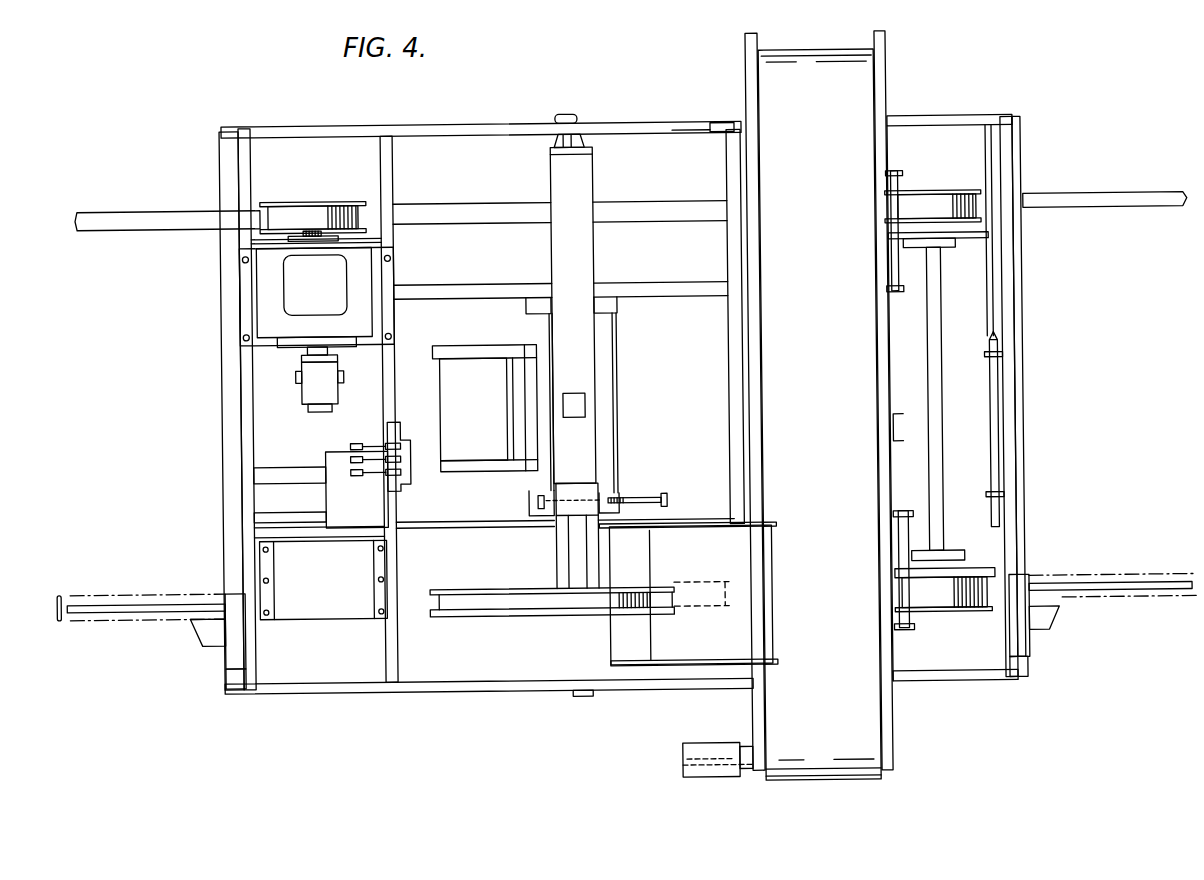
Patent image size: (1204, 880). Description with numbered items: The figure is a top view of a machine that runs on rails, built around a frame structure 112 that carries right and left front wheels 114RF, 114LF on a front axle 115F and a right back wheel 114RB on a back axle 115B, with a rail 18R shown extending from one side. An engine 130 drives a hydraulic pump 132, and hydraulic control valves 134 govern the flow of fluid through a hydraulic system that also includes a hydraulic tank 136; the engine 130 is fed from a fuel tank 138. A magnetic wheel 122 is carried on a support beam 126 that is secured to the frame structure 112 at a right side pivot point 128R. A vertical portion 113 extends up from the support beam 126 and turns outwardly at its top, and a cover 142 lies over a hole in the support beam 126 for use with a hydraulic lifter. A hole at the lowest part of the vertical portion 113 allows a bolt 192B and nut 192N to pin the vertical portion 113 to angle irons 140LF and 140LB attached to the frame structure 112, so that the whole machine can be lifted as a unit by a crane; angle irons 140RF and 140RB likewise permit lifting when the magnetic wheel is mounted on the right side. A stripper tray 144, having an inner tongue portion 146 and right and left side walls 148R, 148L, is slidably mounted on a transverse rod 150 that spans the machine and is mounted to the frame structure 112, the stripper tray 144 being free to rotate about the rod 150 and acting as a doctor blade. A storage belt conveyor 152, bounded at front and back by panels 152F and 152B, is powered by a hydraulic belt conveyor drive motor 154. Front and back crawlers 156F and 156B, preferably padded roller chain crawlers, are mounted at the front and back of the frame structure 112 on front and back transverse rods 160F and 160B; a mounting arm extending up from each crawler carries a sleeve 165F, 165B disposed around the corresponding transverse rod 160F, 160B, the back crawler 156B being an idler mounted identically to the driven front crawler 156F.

The right side rail 18R is at (148, 216).
The frame structure 112 is at (672, 126).
The vertical portion 113 is at (568, 483).
The right back wheel 114RB is at (318, 206).
The right front wheel 114RF is at (935, 195).
The left front wheel 114LF is at (948, 610).
The back axle 115B is at (320, 228).
The front axle 115F is at (942, 320).
The magnetic wheel 122 is at (500, 610).
The support beam 126 is at (585, 255).
The right side pivot point 128R is at (573, 138).
The engine 130 is at (290, 283).
The hydraulic pump 132 is at (305, 400).
The hydraulic control valve 134 is at (400, 440).
The hydraulic tank 136 is at (324, 579).
The fuel tank 138 is at (484, 408).
The angle iron 140RB is at (552, 305).
The angle iron 140RF is at (612, 313).
The angle iron 140LB is at (535, 510).
The angle iron 140LF is at (605, 497).
The cover 142 is at (588, 402).
The stripper tray 144 is at (660, 625).
The inner tongue portion 146 is at (660, 595).
The left side wall 148L is at (678, 688).
The right side wall 148R is at (678, 518).
The transverse rod 150 is at (735, 185).
The storage belt conveyor 152 is at (855, 770).
The back panel 152B is at (748, 70).
The front panel 152F is at (885, 90).
The hydraulic belt conveyor drive motor 154 is at (685, 757).
The back crawler 156B is at (120, 604).
The front crawler 156F is at (1165, 598).
The back transverse rod 160B is at (228, 420).
The front transverse rod 160F is at (1020, 380).
The rear bracket 165B is at (228, 660).
The sleeve 165F is at (1020, 575).
The bolt 192B is at (662, 497).
The nut 192N is at (540, 498).